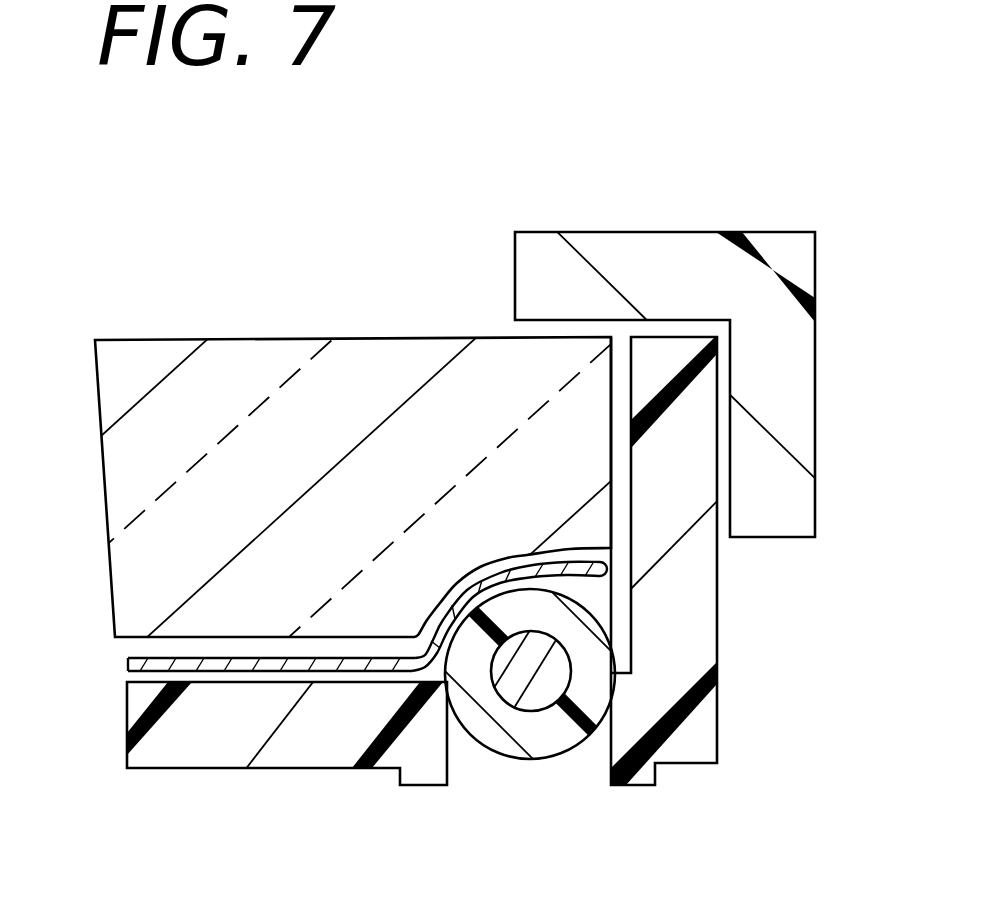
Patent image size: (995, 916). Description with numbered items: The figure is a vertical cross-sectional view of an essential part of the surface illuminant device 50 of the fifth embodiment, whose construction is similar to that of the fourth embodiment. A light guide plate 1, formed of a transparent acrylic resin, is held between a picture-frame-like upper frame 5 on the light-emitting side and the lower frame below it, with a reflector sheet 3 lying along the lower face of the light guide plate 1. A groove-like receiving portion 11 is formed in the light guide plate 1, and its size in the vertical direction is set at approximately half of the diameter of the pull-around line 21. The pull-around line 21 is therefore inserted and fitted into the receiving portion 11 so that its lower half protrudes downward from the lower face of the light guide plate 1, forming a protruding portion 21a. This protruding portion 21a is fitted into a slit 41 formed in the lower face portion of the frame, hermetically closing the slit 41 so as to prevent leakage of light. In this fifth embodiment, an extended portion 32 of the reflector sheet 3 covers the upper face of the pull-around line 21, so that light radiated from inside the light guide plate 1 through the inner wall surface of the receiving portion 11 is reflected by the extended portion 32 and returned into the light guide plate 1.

The surface illuminant device 50 is at (458, 153).
The light guide plate 1 is at (240, 372).
The reflector sheet 3 is at (133, 653).
The upper frame 5 is at (780, 515).
The receiving portion 11 is at (600, 555).
The pull-around line 21 is at (458, 692).
The protruding portion 21a is at (537, 735).
The extended portion 32 is at (593, 580).
The slit 41 is at (447, 760).